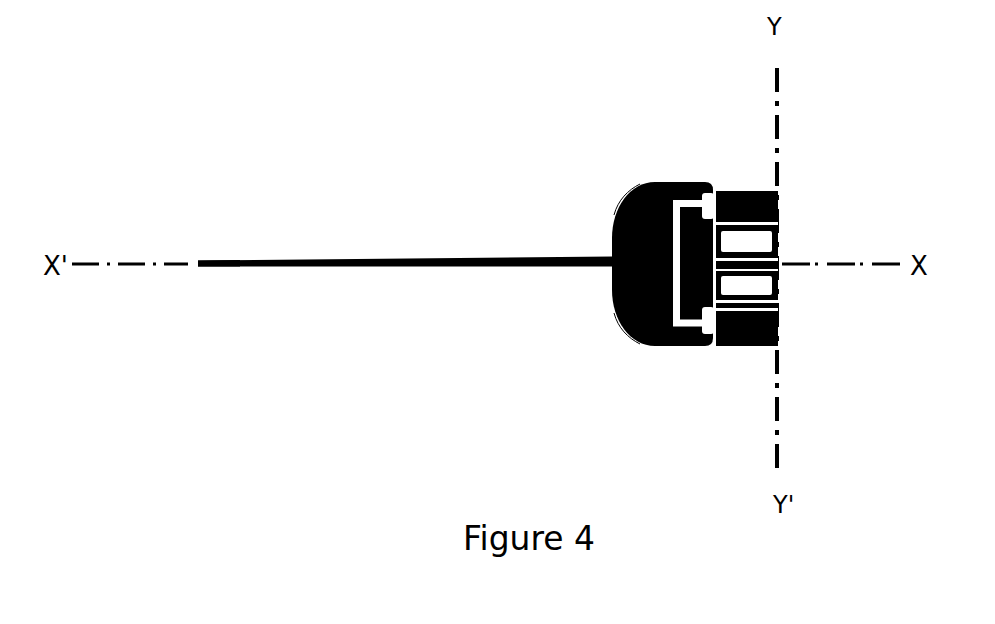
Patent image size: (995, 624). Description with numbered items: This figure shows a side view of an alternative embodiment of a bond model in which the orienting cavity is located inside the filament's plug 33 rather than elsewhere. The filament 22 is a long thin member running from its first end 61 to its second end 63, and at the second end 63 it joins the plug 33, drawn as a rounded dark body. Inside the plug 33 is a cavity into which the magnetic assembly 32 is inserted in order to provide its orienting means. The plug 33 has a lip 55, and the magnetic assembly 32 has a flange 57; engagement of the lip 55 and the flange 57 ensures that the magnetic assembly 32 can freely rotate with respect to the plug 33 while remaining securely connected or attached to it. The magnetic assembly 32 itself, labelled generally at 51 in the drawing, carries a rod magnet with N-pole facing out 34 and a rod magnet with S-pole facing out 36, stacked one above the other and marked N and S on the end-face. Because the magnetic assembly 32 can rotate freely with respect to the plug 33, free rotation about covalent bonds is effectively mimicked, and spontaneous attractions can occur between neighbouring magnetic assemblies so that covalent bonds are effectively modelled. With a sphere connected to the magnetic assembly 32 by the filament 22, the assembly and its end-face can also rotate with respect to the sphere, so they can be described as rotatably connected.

The elongated stem 22 is at (425, 257).
The first end of the filament 61 is at (200, 261).
The second end of the filament 63 is at (607, 257).
The plug 33 is at (617, 207).
The lip 55 is at (719, 192).
The flange 57 is at (704, 347).
The magnet assembly 51 is at (780, 190).
The magnetic assembly 32 is at (778, 211).
The rod magnet with N-pole facing out 34 is at (778, 248).
The rod magnet with S-pole facing out 36 is at (778, 296).